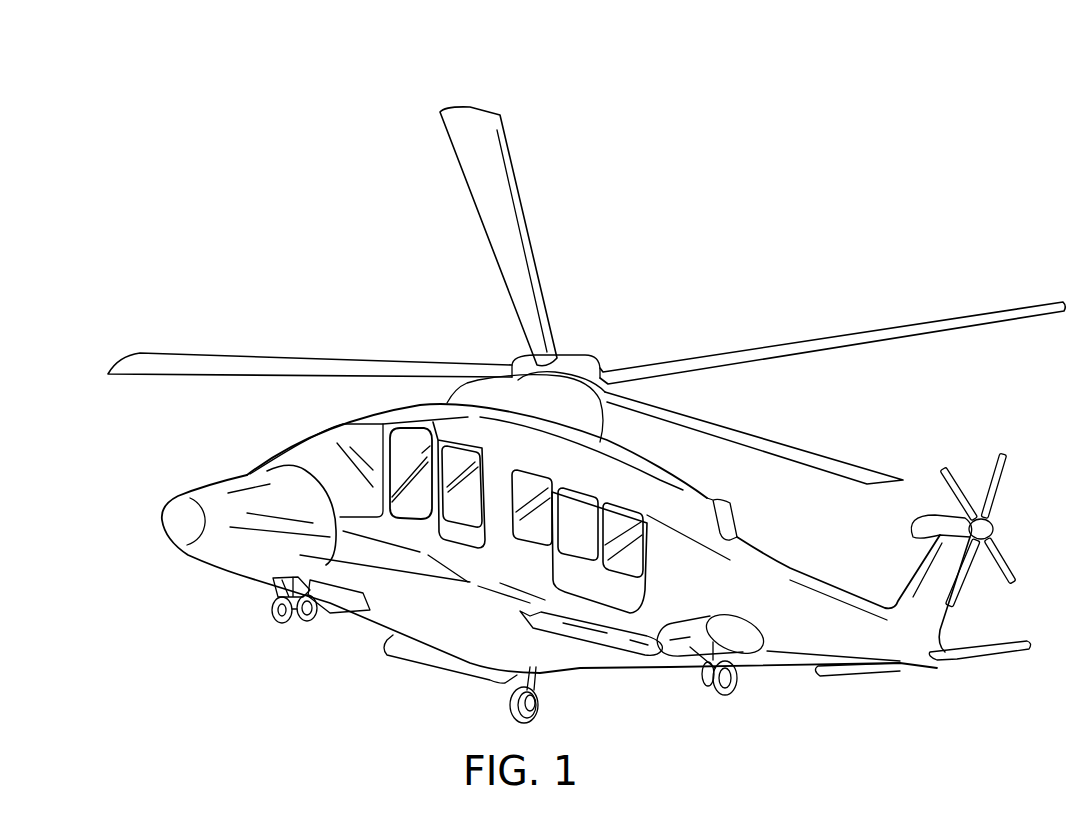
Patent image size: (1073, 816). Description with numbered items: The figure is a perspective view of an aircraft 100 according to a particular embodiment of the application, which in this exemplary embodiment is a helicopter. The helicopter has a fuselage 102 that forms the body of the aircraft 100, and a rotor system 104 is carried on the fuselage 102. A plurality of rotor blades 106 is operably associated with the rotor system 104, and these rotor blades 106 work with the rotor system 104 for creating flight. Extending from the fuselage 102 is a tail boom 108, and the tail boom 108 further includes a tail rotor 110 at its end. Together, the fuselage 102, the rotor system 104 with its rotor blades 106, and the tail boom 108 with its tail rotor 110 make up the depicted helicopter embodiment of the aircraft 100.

The aircraft 100 is at (256, 98).
The fuselage 102 is at (437, 620).
The rotor system 104 is at (589, 333).
The rotor blades 106 is at (817, 352).
The tail boom 108 is at (792, 647).
The tail rotor 110 is at (997, 500).